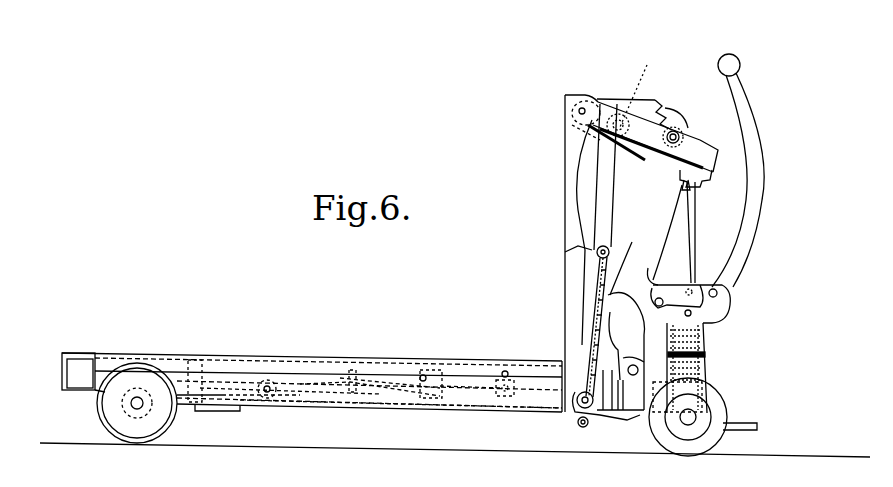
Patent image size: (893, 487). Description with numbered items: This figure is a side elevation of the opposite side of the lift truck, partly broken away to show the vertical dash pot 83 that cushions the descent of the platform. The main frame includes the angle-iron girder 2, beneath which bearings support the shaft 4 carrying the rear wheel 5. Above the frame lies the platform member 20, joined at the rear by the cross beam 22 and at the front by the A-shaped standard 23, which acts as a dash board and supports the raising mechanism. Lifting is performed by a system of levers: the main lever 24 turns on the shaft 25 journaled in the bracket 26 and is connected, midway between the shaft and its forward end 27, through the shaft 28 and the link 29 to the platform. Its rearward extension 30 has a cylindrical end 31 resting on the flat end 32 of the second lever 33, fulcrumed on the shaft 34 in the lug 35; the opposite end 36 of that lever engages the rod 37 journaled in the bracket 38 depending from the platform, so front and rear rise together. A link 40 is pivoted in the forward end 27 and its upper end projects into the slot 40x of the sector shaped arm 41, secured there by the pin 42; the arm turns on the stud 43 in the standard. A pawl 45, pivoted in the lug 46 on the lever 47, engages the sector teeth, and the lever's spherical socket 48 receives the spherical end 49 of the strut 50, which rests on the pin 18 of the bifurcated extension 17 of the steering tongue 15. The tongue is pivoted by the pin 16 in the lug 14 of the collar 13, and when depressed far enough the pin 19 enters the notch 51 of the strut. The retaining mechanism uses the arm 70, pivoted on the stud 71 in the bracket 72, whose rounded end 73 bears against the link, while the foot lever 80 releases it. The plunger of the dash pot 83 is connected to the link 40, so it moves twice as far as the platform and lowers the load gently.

The side member or girder 2 is at (332, 408).
The shaft 4 is at (132, 403).
The rear wheel 5 is at (100, 418).
The collar 13 is at (724, 314).
The lug 14 is at (726, 300).
The steering tongue 15 is at (750, 241).
The bolt or pin 16 is at (718, 292).
The bifurcated rearward extension 17 is at (673, 293).
The pin 18 is at (693, 289).
The pin 19 is at (658, 306).
The platform member 20 is at (330, 357).
The cross beam 22 is at (80, 353).
The A-shaped standard 23 is at (565, 201).
The main lever 24 is at (450, 392).
The shaft 25 is at (425, 376).
The bracket or lug 26 is at (430, 398).
The forward end of main lever 27 is at (579, 413).
The shaft 28 is at (508, 372).
The link 29 is at (495, 370).
The rearward extension 30 is at (370, 374).
The cylindrical end 31 is at (350, 368).
The end of second lever 32 is at (354, 394).
The second lever 33 is at (294, 398).
The shaft 34 is at (268, 392).
The lug 35 is at (250, 396).
The end of second lever 36 is at (216, 406).
The shaft or rod 37 is at (200, 397).
The bracket 38 is at (192, 358).
The link 40 is at (614, 212).
The slot 40x is at (596, 139).
The sector shaped arm 41 is at (613, 102).
The pin 42 is at (683, 80).
The stud 43 is at (579, 111).
The pawl 45 is at (680, 112).
The lug 46 is at (682, 136).
The lever 47 is at (708, 152).
The spherical socket 48 is at (705, 179).
The spherical end 49 is at (683, 182).
The strut 50 is at (694, 216).
The notch 51 is at (647, 268).
The arm 70 is at (634, 348).
The stud 71 is at (639, 371).
The bracket 72 is at (633, 400).
The rounded end 73 is at (609, 296).
The foot lever 80 is at (640, 405).
The dash pot 83 is at (583, 340).